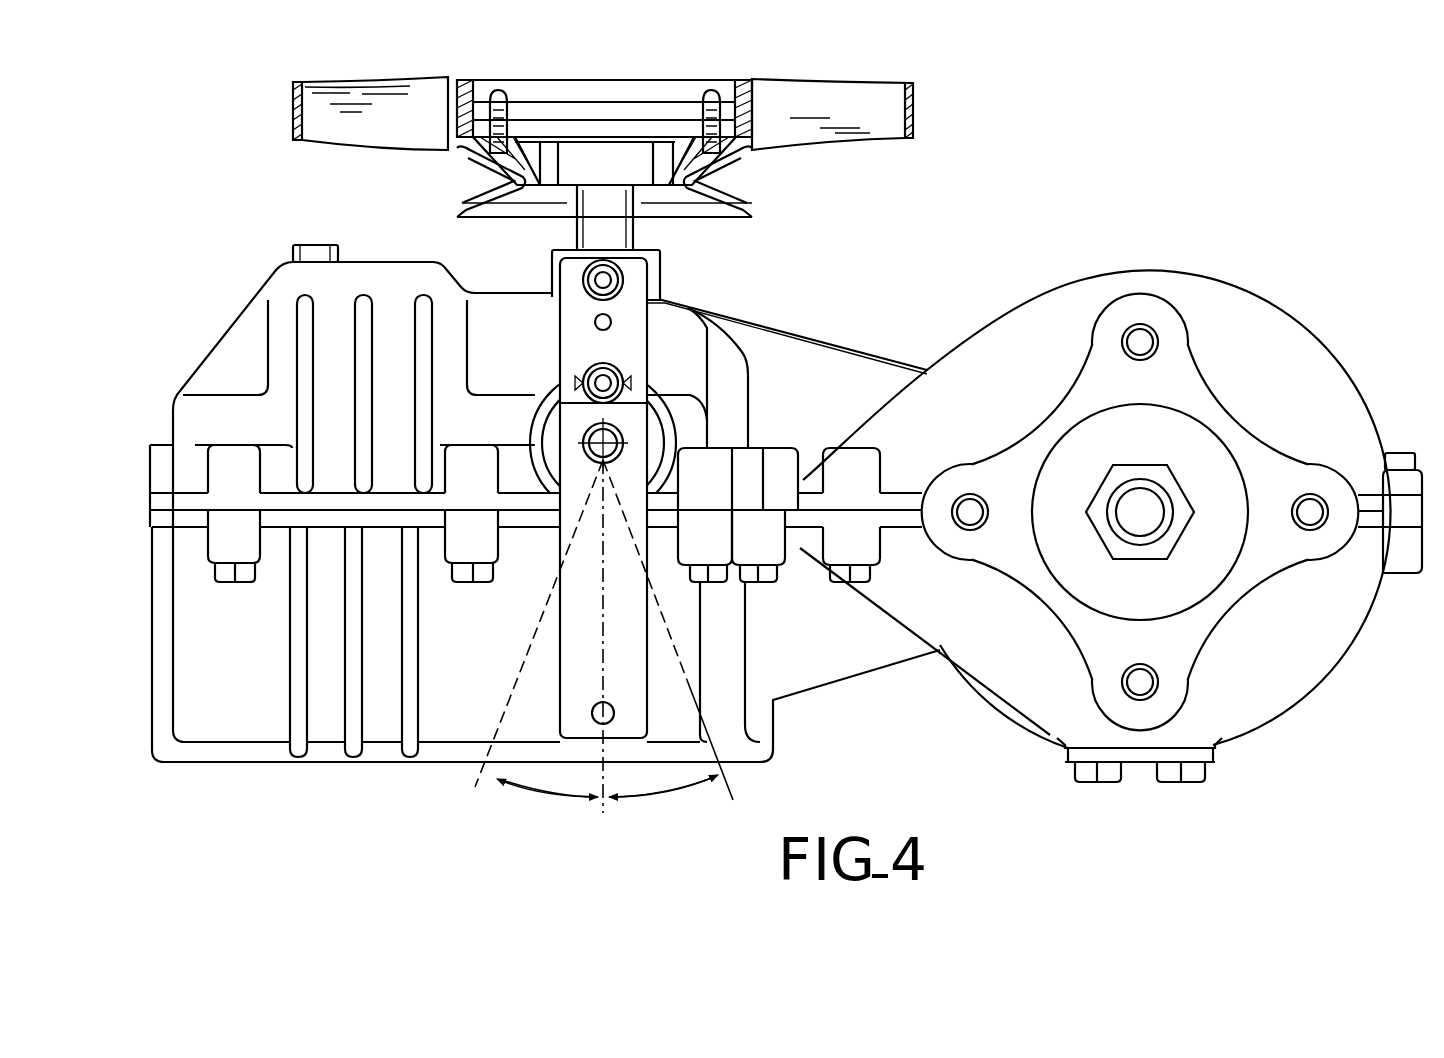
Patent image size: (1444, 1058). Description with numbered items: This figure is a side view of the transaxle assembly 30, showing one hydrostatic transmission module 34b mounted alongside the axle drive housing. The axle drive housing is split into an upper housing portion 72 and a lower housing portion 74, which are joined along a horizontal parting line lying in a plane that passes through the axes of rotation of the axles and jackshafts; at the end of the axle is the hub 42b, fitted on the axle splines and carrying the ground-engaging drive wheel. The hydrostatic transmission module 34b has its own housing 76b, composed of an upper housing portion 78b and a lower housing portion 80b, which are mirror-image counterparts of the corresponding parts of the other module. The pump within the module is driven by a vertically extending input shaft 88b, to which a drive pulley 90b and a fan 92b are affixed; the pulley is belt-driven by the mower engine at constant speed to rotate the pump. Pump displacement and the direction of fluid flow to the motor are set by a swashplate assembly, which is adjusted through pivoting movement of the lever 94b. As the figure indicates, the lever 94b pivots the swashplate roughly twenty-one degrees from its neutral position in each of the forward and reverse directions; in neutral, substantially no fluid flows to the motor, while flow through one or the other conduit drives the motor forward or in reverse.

The fan 92b is at (913, 126).
The drive pulley 90b is at (752, 211).
The input shaft 88b is at (622, 232).
The lever 94b is at (582, 655).
The upper housing portion 78b is at (238, 355).
The housing 76b is at (278, 770).
The lower housing portion 80b is at (206, 742).
The hydrostatic transmission module 34b is at (455, 770).
The lower housing portion 74 is at (1322, 625).
The transaxle assembly 30 is at (1292, 714).
The upper housing portion 72 is at (1284, 348).
The hub 42b is at (1210, 340).